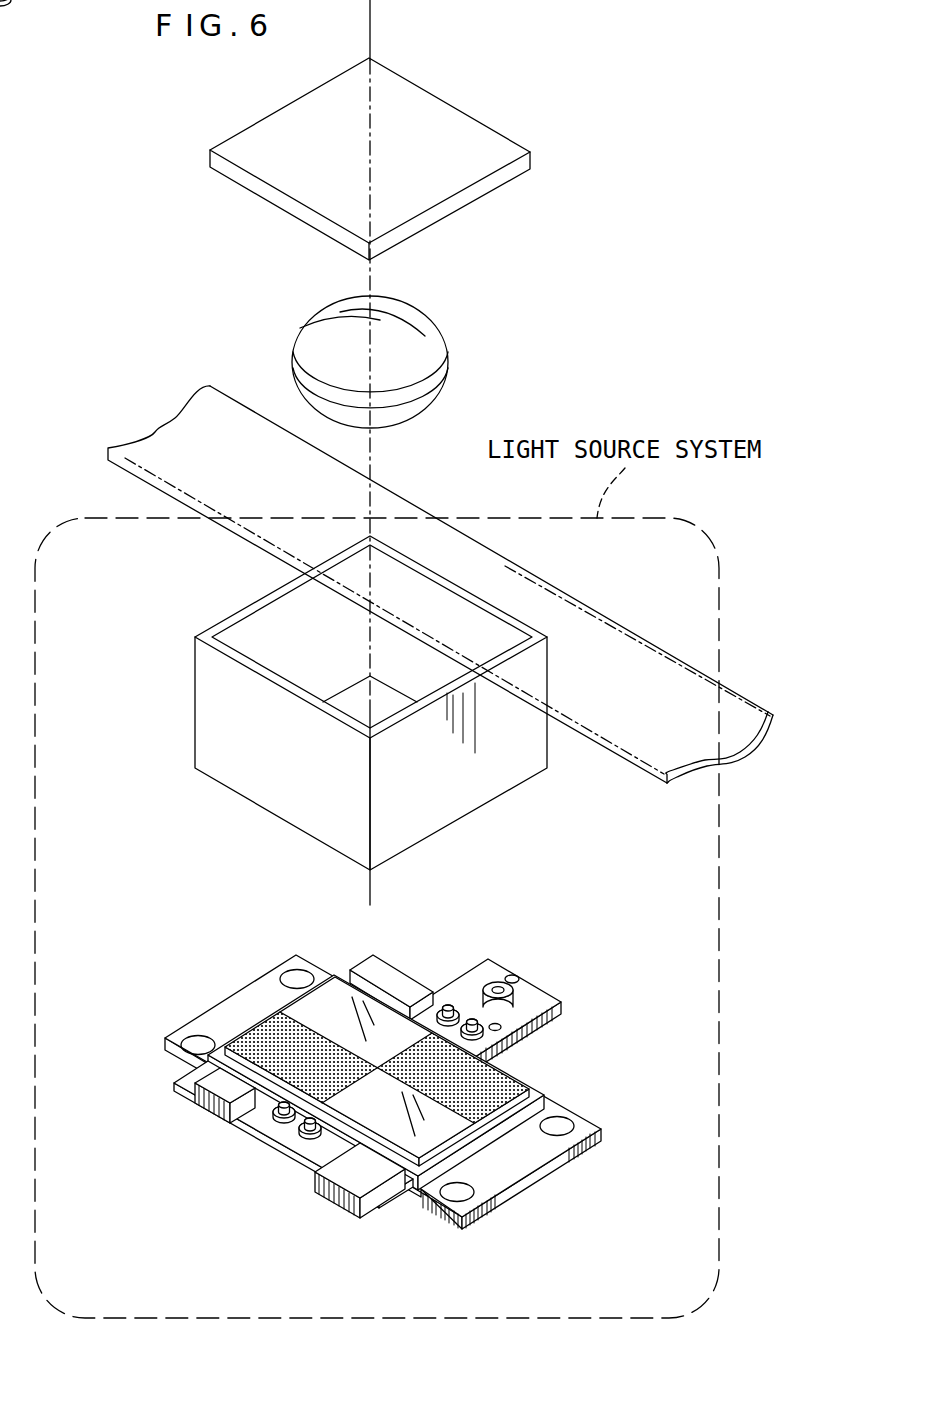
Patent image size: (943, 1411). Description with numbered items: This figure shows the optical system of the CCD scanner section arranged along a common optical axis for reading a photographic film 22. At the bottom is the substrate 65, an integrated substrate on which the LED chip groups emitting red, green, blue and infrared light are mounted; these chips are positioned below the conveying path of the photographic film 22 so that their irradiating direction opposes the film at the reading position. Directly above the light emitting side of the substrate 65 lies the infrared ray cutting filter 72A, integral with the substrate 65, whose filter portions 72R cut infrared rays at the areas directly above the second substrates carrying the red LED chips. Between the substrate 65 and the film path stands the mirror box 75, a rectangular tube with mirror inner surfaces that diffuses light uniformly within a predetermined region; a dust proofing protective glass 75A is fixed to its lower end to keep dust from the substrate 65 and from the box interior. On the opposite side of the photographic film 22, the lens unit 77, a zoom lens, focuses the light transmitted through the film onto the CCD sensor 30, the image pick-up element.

The CCD sensor 30 is at (455, 172).
The lens unit 77 is at (425, 356).
The photographic film 22 is at (737, 702).
The mirror box 75 is at (345, 703).
The dust proofing protective glass 75A is at (355, 702).
The substrate 65 is at (332, 648).
The infrared ray cutting filter 72A is at (369, 1042).
The filter portions 72R is at (222, 1057).